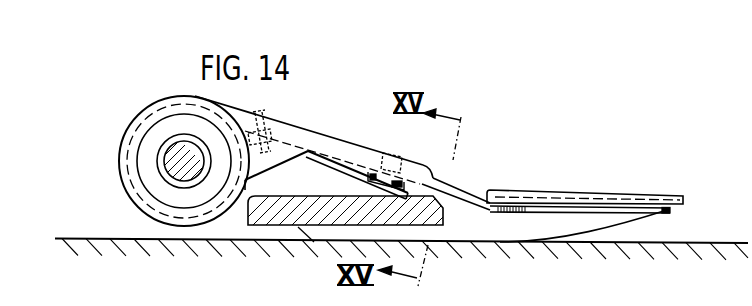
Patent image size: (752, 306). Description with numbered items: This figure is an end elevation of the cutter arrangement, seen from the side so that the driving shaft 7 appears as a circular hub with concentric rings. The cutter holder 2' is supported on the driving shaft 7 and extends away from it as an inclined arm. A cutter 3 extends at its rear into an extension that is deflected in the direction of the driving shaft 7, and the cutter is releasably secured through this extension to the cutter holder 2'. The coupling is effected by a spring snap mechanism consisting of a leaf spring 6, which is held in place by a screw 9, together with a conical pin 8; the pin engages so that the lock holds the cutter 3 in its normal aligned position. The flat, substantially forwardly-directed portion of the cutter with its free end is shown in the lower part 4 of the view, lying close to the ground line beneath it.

The driving shaft 7 is at (167, 158).
The screw 9 is at (263, 117).
The support arm 2' is at (342, 152).
The conical pin 8 is at (393, 155).
The leaf spring 6 is at (329, 166).
The plate 3 is at (551, 198).
The lower part 4 is at (640, 209).